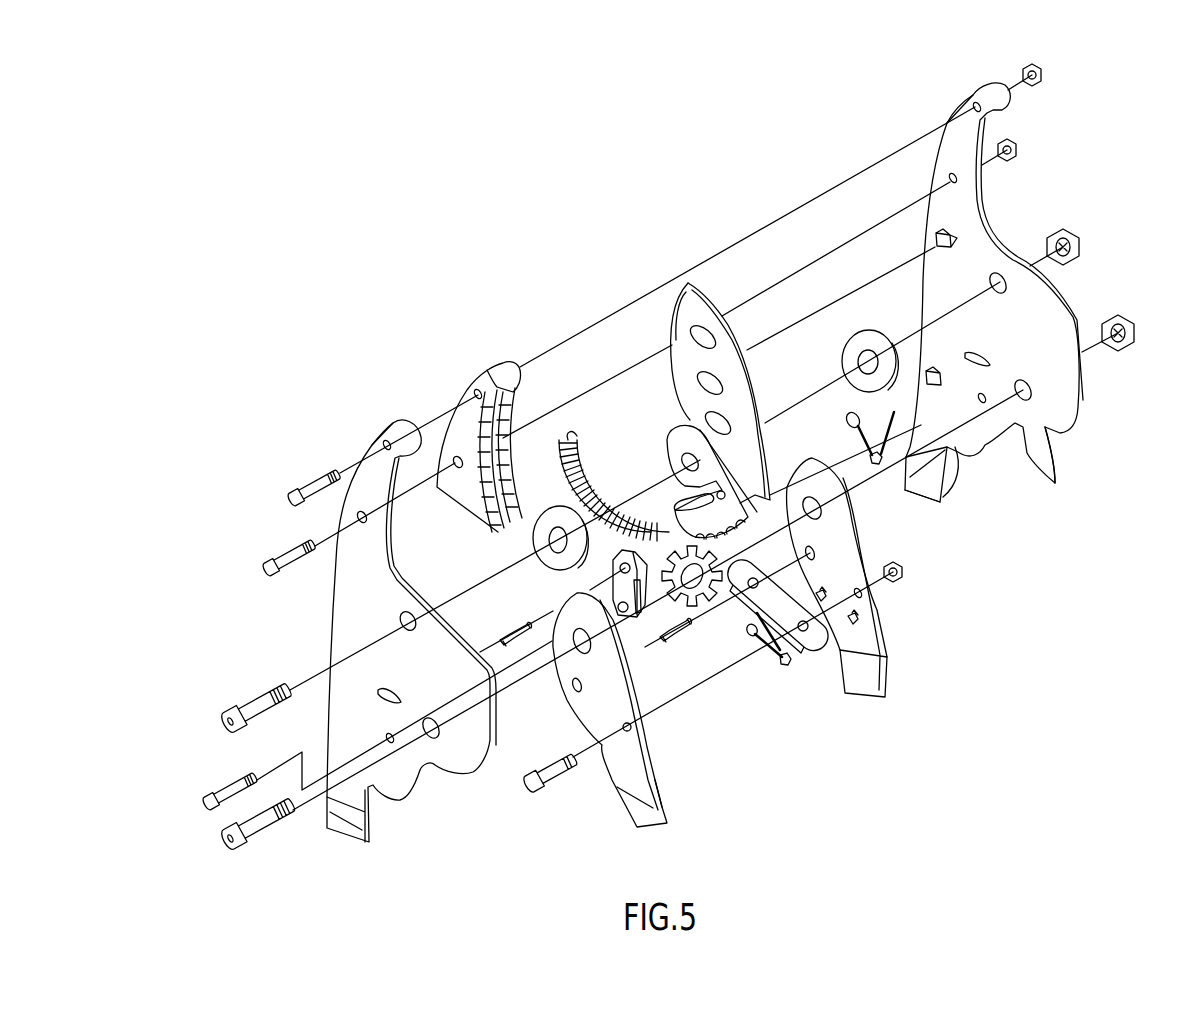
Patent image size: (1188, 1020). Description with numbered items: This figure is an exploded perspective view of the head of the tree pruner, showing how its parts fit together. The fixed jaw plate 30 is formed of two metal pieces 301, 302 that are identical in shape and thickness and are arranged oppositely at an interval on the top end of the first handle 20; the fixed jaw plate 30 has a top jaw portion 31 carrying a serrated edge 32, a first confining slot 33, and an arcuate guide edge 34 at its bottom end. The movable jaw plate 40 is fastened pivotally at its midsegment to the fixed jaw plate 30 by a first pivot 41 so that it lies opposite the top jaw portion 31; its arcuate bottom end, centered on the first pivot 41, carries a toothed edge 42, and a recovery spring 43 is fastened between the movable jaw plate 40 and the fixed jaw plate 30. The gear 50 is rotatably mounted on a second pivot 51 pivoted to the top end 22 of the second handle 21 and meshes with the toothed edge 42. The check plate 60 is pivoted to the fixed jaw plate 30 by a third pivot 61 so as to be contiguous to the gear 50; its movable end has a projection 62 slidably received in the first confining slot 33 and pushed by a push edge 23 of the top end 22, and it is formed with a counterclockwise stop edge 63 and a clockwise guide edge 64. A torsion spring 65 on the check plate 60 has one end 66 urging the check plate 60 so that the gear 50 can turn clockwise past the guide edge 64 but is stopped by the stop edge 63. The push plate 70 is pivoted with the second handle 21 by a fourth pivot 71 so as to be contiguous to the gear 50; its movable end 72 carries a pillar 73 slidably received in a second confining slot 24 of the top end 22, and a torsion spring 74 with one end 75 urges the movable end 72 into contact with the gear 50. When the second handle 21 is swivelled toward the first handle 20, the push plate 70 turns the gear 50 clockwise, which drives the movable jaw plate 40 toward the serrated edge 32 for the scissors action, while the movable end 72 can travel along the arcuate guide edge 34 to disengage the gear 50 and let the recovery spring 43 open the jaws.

The first handle 20 is at (933, 510).
The second handle 21 is at (883, 700).
The top end of the second handle 22 is at (640, 713).
The push edge 23 is at (560, 607).
The second confining slot 24 is at (570, 680).
The fixed jaw plate 30 is at (1110, 410).
The top jaw portion 31 is at (397, 538).
The serrated edge 32 is at (468, 410).
The first confining slot 33 is at (387, 693).
The arcuate guide edge 34 is at (1062, 470).
The movable jaw plate 40 is at (753, 390).
The first pivot 41 is at (260, 697).
The toothed edge 42 is at (680, 427).
The recovery spring 43 is at (600, 487).
The gear 50 is at (699, 604).
The second pivot 51 is at (267, 830).
The check plate 60 is at (618, 588).
The third pivot 61 is at (228, 788).
The projection 62 is at (500, 633).
The counterclockwise stop edge 63 is at (672, 520).
The clockwise guide edge 64 is at (640, 615).
The torsion spring 65 is at (862, 443).
The end of the torsion spring 66 is at (872, 455).
The push plate 70 is at (808, 640).
The fourth pivot 71 is at (557, 777).
The movable end of the push plate 72 is at (755, 585).
The pillar 73 is at (677, 633).
The torsion spring 74 is at (763, 657).
The end of the torsion spring 75 is at (800, 662).
The metal piece 301 is at (333, 635).
The metal piece 302 is at (925, 283).